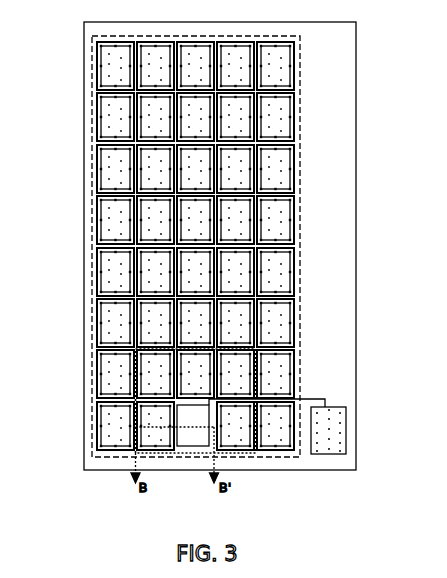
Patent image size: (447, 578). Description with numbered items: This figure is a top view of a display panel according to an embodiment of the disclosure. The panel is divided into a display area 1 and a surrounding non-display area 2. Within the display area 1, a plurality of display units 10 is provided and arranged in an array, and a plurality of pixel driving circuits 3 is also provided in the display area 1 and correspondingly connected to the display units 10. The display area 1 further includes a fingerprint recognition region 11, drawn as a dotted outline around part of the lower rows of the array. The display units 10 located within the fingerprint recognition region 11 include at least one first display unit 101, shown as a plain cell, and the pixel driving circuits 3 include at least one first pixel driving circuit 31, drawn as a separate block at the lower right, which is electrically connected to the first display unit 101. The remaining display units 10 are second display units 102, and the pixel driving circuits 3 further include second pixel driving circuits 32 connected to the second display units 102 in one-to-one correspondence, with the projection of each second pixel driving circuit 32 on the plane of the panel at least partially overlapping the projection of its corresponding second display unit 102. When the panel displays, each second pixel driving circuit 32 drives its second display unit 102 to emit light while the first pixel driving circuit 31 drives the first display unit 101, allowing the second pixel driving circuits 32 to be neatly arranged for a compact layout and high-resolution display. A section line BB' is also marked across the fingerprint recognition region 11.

The display area 1 is at (92, 318).
The non-display area 2 is at (88, 199).
The pixel driving circuits 3 is at (199, 246).
The display units 10 is at (117, 267).
The second pixel driving circuit 32 is at (297, 334).
The second display unit 102 is at (283, 322).
The fingerprint recognition region 11 is at (135, 456).
The first display unit 101 is at (197, 440).
The first pixel driving circuit 31 is at (335, 455).